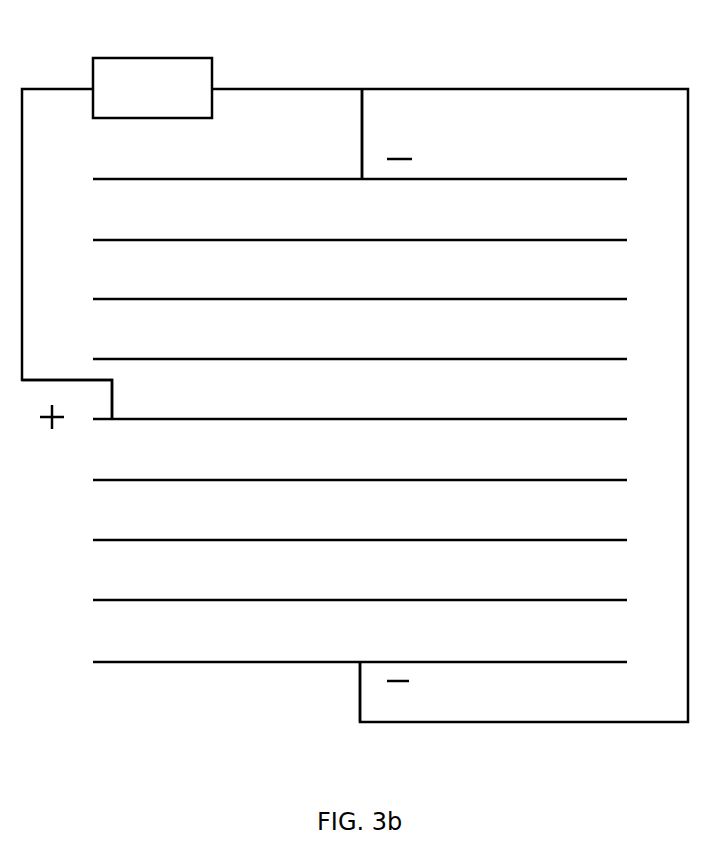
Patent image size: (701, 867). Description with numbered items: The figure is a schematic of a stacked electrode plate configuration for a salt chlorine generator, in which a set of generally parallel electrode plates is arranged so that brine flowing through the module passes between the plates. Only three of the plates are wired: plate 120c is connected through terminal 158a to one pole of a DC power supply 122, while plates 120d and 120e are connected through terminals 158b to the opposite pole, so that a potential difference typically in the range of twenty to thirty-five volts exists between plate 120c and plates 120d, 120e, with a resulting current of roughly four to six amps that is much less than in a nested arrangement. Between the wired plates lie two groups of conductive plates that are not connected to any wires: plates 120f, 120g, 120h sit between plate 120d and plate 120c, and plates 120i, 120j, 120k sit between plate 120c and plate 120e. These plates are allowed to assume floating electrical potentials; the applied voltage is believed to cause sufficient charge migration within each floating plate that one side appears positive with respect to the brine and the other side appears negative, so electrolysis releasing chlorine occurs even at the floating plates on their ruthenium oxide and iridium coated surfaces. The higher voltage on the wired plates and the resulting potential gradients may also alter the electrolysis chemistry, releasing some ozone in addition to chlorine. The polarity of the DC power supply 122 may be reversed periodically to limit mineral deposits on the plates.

The DC power supply 122 is at (113, 58).
The terminal 158a is at (112, 381).
The terminal 158b is at (363, 92).
The electrode plate 120c is at (128, 420).
The electrode plate 120d is at (330, 179).
The electrode plate 120e is at (330, 664).
The floating potential electrode plate 120f is at (468, 240).
The floating potential electrode plate 120g is at (468, 299).
The floating potential electrode plate 120h is at (468, 359).
The floating potential electrode plate 120i is at (468, 480).
The floating potential electrode plate 120j is at (468, 540).
The floating potential electrode plate 120k is at (468, 600).